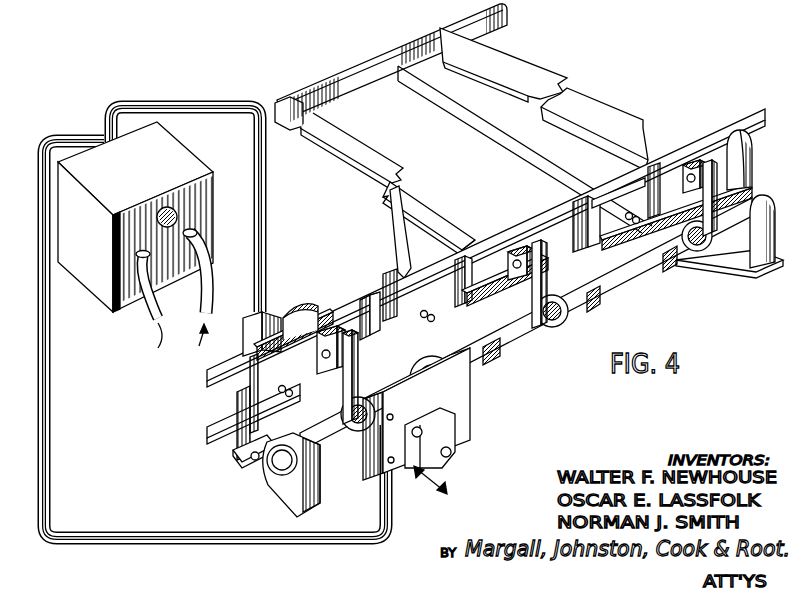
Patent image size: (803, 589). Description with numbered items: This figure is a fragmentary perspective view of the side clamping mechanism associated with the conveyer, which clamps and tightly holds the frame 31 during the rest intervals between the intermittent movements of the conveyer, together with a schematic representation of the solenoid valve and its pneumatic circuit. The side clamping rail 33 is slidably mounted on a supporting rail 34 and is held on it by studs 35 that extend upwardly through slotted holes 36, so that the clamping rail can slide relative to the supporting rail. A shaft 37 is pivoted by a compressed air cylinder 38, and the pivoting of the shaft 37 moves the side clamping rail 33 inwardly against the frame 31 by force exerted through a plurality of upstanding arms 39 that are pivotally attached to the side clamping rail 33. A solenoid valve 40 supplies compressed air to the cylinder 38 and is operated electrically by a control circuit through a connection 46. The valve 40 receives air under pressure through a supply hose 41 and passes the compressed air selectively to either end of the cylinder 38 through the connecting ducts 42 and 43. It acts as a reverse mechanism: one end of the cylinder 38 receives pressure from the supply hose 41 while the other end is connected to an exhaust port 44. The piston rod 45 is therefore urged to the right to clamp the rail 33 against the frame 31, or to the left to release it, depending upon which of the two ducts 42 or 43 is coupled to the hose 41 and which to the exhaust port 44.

The frame 31 is at (642, 122).
The side clamping rail 33 is at (365, 326).
The supporting rail 34 is at (212, 393).
The studs 35 is at (287, 388).
The slotted holes 36 is at (284, 380).
The shaft 37 is at (638, 288).
The compressed air cylinder 38 is at (305, 312).
The upstanding arms 39 is at (357, 386).
The solenoid valve 40 is at (141, 191).
The supply hose 41 is at (213, 288).
The connecting duct 42 is at (268, 223).
The connecting duct 43 is at (52, 432).
The exhaust port 44 is at (182, 213).
The piston rod 45 is at (457, 440).
The connection 46 is at (150, 308).